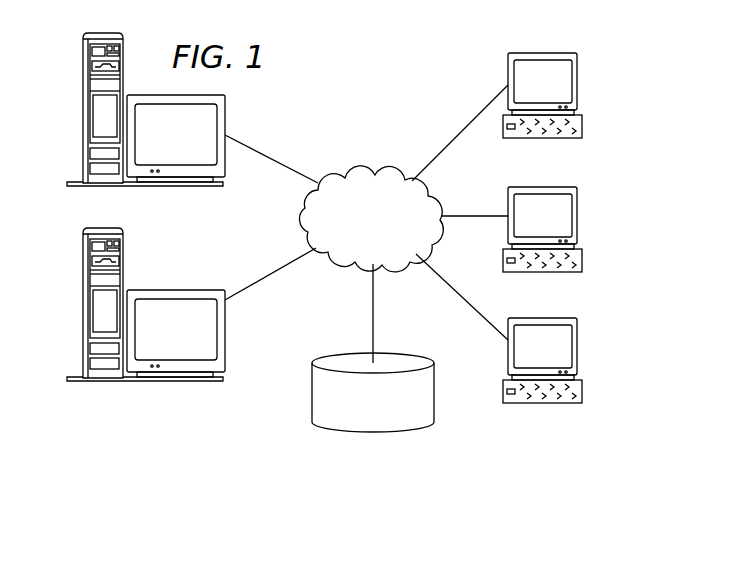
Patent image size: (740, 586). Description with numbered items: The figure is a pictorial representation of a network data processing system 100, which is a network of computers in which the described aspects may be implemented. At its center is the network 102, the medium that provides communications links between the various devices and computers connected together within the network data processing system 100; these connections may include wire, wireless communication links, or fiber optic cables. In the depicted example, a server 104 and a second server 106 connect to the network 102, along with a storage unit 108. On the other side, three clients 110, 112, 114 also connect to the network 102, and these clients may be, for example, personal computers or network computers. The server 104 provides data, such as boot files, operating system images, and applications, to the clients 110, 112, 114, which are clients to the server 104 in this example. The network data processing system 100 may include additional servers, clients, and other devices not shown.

The network data processing system 100 is at (419, 68).
The network 102 is at (348, 170).
The server 104 is at (83, 112).
The server 106 is at (83, 307).
The storage unit 108 is at (356, 432).
The client 110 is at (577, 82).
The client 112 is at (577, 216).
The client 114 is at (577, 340).